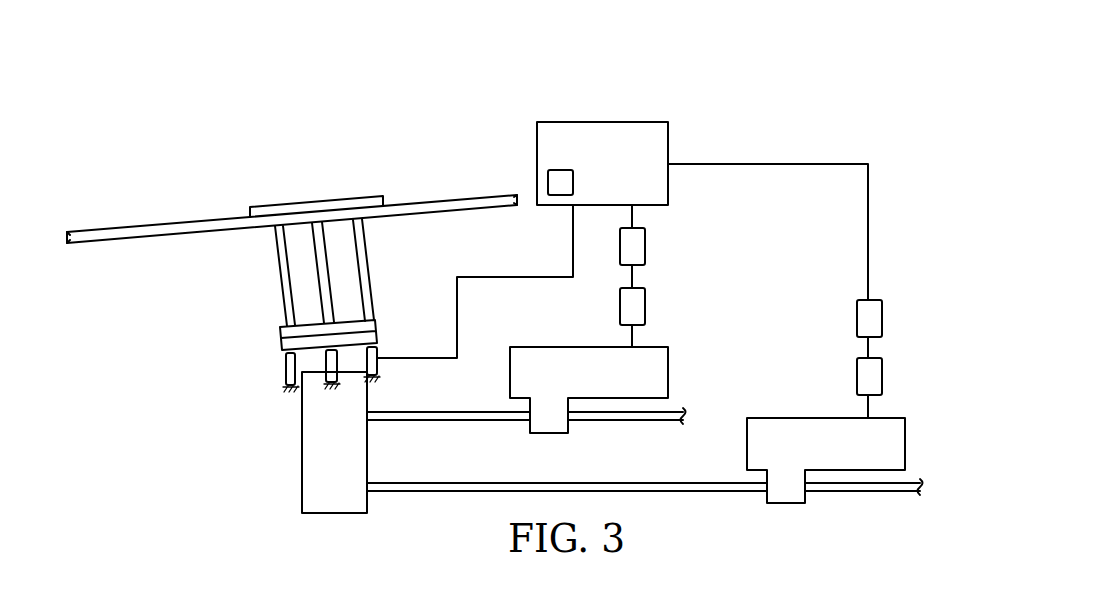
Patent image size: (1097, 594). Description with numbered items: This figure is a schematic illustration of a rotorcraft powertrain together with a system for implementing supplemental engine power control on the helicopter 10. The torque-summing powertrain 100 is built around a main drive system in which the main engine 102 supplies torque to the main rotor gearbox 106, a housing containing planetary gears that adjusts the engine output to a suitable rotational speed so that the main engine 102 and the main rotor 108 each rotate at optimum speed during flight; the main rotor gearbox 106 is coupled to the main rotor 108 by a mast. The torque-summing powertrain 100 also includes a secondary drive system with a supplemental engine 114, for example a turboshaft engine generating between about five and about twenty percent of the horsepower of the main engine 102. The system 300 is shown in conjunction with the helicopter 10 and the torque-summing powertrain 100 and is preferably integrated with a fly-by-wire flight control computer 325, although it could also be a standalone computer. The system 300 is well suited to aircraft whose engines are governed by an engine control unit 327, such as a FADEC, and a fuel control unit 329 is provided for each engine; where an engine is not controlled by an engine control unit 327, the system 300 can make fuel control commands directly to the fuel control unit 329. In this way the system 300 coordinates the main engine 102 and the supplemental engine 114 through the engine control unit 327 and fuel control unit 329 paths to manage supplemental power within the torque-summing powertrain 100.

The helicopter 10 is at (156, 182).
The torque-summing powertrain 100 is at (776, 130).
The main engine 102 is at (572, 346).
The main rotor gearbox 106 is at (300, 453).
The main rotor 108 is at (256, 189).
The supplemental engine 114 is at (810, 417).
The system 300 is at (574, 182).
The flight control computer 325 is at (609, 118).
The engine control unit 327 is at (647, 246).
The fuel control unit 329 is at (647, 306).